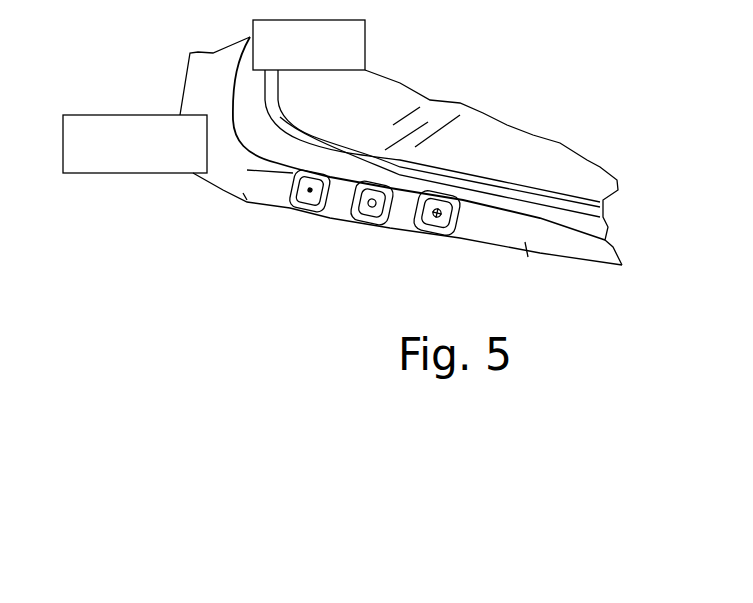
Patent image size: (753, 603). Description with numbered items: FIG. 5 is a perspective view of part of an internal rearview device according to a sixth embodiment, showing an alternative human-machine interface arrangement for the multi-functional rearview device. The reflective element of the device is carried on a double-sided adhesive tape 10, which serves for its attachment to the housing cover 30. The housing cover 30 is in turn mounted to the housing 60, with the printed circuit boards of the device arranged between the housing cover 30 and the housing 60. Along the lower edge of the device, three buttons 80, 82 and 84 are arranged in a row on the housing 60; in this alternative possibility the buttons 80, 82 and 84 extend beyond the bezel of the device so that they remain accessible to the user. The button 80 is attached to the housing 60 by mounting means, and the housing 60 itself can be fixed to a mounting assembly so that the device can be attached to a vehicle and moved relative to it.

The double-sided adhesive tape 10 is at (500, 129).
The housing cover 30 is at (262, 93).
The housing 60 is at (110, 156).
The button 80 is at (280, 183).
The button 82 is at (370, 229).
The button 84 is at (449, 233).